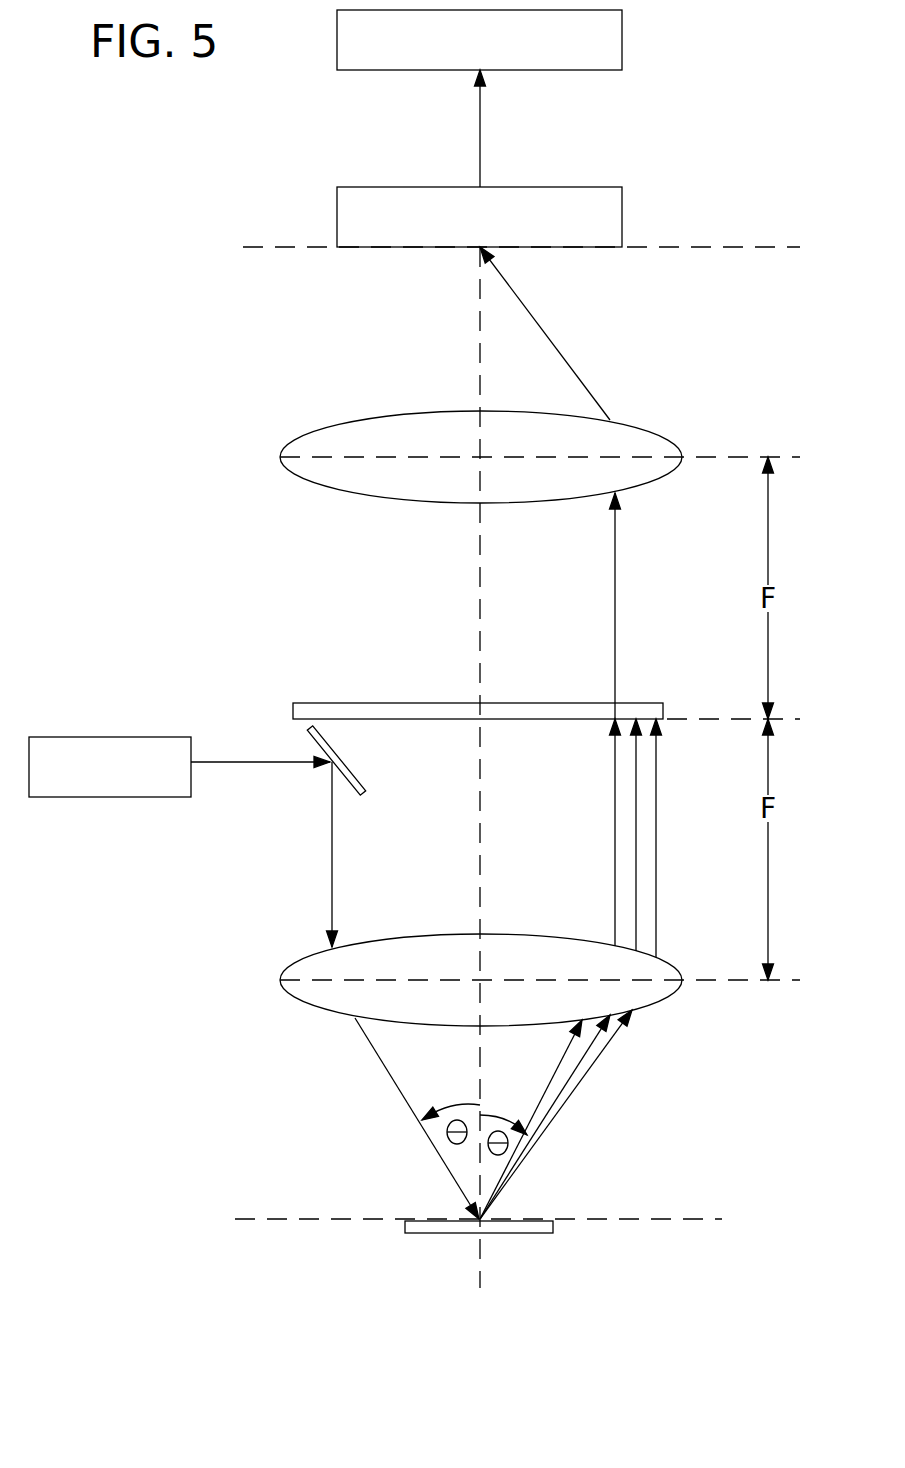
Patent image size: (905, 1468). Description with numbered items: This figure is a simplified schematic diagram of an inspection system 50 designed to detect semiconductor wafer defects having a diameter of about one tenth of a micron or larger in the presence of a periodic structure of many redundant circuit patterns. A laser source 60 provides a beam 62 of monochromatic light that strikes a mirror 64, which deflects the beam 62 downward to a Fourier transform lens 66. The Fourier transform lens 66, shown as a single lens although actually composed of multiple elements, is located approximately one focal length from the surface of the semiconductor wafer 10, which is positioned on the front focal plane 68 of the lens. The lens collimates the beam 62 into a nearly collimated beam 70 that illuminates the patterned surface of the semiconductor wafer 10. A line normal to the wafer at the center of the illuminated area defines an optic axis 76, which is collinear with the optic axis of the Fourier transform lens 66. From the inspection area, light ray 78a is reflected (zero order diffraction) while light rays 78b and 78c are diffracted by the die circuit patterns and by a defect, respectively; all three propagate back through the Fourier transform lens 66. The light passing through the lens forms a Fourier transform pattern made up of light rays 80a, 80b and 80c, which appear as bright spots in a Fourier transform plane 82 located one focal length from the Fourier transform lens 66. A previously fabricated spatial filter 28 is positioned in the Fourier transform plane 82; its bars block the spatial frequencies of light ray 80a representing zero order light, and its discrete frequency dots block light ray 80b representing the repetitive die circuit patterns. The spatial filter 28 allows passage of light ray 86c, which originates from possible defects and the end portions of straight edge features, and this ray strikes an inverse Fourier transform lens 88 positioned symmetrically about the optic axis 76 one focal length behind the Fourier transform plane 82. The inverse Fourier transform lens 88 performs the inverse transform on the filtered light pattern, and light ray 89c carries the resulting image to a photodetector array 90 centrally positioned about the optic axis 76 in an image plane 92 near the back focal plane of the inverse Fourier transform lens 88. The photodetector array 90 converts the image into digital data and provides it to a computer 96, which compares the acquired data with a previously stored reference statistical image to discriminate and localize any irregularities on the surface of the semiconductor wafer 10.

The semiconductor wafer 10 is at (465, 1235).
The spatial filter 28 is at (648, 703).
The inspection system 50 is at (172, 1198).
The laser source 60 is at (100, 797).
The beam 62 is at (248, 766).
The mirror 64 is at (352, 767).
The Fourier transform lens 66 is at (640, 1012).
The front focal plane 68 is at (318, 1221).
The nearly collimated beam 70 is at (392, 1082).
The optic axis 76 is at (478, 675).
The reflected light ray 78a is at (556, 1103).
The diffracted light ray 78b is at (590, 1070).
The diffracted light ray 78c is at (535, 1100).
The light ray 80a is at (636, 846).
The light ray 80b is at (657, 815).
The light ray 80c is at (613, 797).
The Fourier transform plane 82 is at (718, 722).
The light ray 86c is at (613, 560).
The inverse Fourier transform lens 88 is at (682, 457).
The light ray 89c is at (537, 321).
The photodetector array 90 is at (622, 226).
The image plane 92 is at (718, 249).
The computer 96 is at (622, 33).